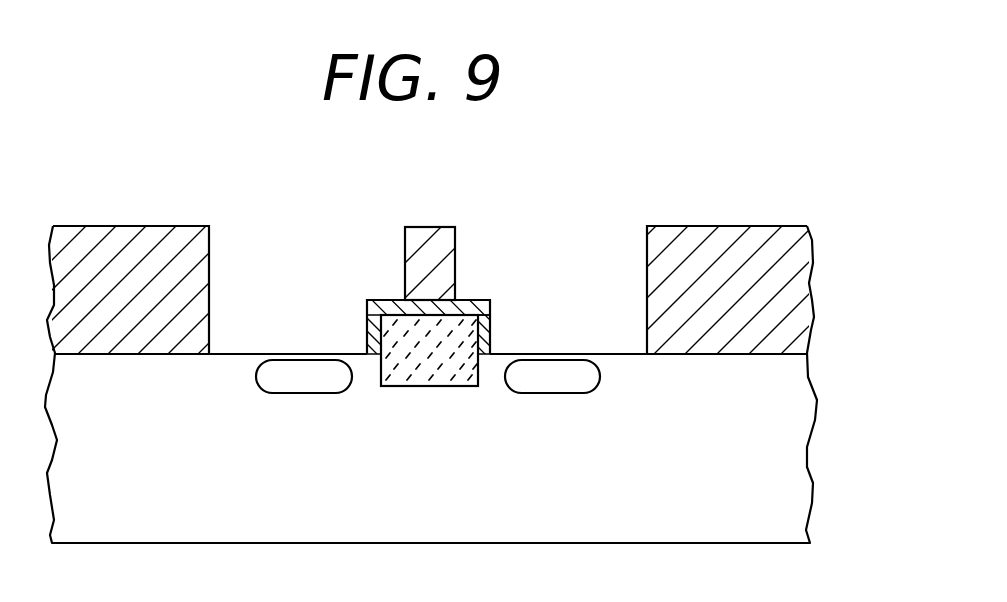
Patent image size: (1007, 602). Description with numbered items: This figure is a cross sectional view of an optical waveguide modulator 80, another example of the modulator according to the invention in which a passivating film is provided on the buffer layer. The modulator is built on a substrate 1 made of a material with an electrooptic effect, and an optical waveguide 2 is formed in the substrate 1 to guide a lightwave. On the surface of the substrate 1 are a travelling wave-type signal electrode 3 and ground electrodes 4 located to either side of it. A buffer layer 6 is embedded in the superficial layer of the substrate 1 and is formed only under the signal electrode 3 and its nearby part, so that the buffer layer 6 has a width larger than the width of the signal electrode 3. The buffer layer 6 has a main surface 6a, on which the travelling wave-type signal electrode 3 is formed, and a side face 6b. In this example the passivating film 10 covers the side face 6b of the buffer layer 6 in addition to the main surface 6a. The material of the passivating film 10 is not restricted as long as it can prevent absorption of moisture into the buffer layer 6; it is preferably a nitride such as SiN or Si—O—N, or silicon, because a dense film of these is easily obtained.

The substrate 1 is at (777, 472).
The optical waveguide 2 is at (297, 378).
The travelling wave-type signal electrode 3 is at (432, 240).
The ground electrodes 4 is at (148, 246).
The buffer layer 6 is at (450, 343).
The main surface 6a is at (388, 300).
The side face 6b is at (369, 327).
The passivating film 10 is at (462, 300).
The optical waveguide modulator 80 is at (837, 225).